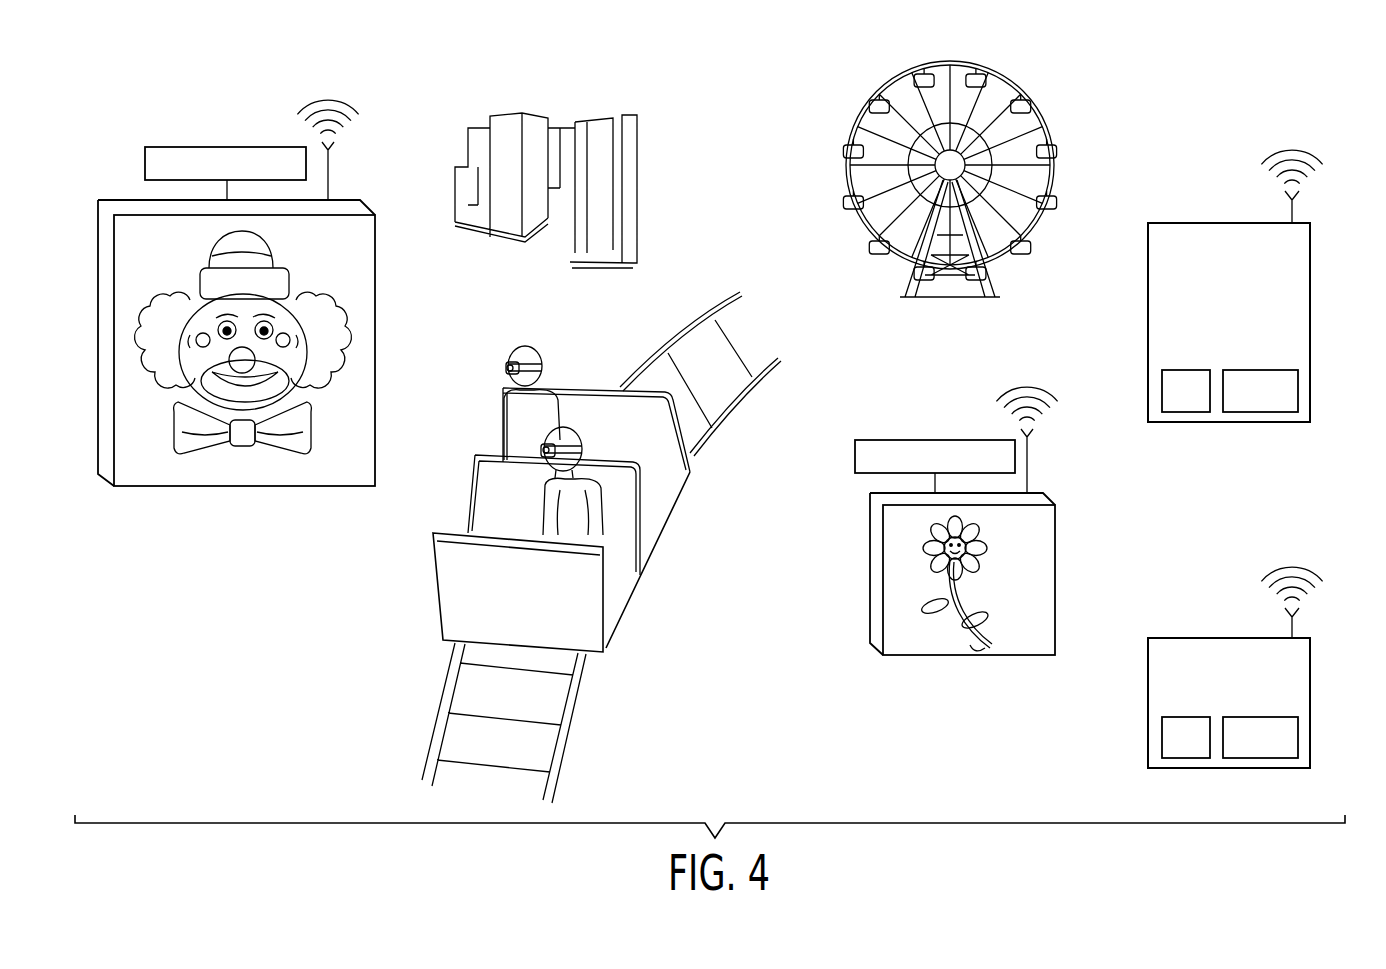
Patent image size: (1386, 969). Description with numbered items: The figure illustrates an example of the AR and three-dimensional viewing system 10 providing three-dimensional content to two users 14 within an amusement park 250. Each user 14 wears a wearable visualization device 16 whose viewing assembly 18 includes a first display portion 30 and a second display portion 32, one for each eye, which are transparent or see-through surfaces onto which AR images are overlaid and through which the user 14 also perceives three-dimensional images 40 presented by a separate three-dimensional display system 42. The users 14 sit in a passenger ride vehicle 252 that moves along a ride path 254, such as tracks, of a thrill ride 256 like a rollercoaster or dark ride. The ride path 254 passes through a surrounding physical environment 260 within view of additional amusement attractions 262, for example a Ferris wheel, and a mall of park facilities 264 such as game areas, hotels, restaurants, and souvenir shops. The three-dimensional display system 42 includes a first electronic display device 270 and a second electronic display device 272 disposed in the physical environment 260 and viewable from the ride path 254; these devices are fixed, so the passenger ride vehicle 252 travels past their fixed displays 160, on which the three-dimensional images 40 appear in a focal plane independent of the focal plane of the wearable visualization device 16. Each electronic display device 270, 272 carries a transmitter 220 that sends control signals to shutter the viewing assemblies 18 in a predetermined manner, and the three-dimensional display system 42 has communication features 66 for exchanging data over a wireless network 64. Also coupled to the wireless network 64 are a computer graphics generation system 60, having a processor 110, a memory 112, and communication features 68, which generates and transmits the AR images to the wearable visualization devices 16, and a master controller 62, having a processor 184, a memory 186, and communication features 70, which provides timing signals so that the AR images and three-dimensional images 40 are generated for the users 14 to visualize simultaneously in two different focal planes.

The AR and 3-D viewing system 10 is at (1144, 112).
The user 14 is at (527, 348).
The wearable visualization device 16 is at (555, 365).
The viewing assembly 18 is at (498, 369).
The first display portion 30 is at (505, 362).
The second display portion 32 is at (517, 366).
The 3-D images 40 is at (330, 298).
The 3-D display system 42 is at (124, 150).
The computer graphics generation system 60 is at (1338, 335).
The master controller 62 is at (1332, 735).
The wireless network 64 is at (1167, 195).
The communication features of the 3-D display system 66 is at (329, 176).
The communication features of the computer graphics generation system 68 is at (1295, 218).
The communication features of the master controller 70 is at (1295, 630).
The processor 110 is at (1185, 413).
The memory 112 is at (1260, 413).
The fixed display 160 is at (328, 454).
The processor 184 is at (1185, 759).
The memory 186 is at (1260, 759).
The transmitter 220 is at (192, 147).
The amusement park 250 is at (1079, 126).
The passenger ride vehicle 252 is at (612, 654).
The ride path 254 is at (735, 406).
The thrill ride 256 is at (655, 344).
The physical environment 260 is at (850, 305).
The amusement attractions 262 is at (880, 96).
The mall of park facilities 264 is at (540, 114).
The first electronic display device 270 is at (88, 206).
The second electronic display device 272 is at (954, 418).